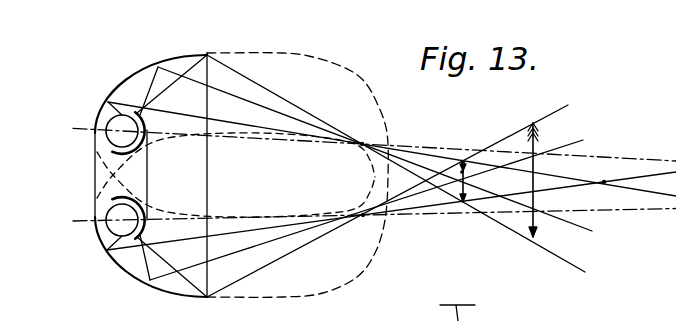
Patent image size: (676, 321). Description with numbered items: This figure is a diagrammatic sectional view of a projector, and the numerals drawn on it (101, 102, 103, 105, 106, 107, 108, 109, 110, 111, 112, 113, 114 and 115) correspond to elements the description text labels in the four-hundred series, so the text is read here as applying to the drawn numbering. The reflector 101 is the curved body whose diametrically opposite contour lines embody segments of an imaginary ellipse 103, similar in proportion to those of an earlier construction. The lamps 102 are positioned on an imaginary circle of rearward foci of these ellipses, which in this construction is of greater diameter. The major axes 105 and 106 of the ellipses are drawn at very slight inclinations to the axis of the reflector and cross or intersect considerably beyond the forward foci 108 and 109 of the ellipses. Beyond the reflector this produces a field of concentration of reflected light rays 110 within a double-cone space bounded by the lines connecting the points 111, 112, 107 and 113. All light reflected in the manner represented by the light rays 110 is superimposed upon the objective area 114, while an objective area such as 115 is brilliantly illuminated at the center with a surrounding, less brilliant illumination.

The reflector housing body 101 is at (137, 72).
The light sources (lamps) 102 is at (112, 138).
The outer elliptical reflector outline 103 is at (277, 54).
The upper optical axis 105 is at (415, 147).
The lower optical axis 106 is at (413, 212).
The inner elliptical reflector surfaces 107 is at (375, 184).
The upper focal point 108 is at (367, 142).
The lower focal point 109 is at (361, 218).
The light rays 110 is at (253, 124).
The ray crossing point 111 is at (463, 160).
The ray crossing point 112 is at (604, 182).
The beam width indicator 113 is at (463, 202).
The beam section 114 is at (462, 172).
The image plane arrow 115 is at (532, 182).